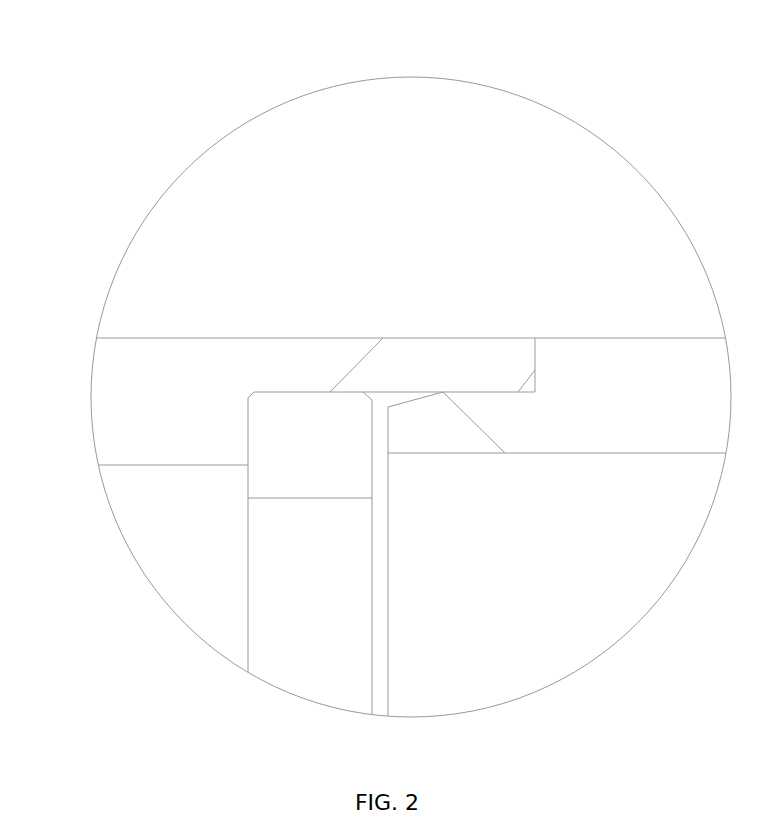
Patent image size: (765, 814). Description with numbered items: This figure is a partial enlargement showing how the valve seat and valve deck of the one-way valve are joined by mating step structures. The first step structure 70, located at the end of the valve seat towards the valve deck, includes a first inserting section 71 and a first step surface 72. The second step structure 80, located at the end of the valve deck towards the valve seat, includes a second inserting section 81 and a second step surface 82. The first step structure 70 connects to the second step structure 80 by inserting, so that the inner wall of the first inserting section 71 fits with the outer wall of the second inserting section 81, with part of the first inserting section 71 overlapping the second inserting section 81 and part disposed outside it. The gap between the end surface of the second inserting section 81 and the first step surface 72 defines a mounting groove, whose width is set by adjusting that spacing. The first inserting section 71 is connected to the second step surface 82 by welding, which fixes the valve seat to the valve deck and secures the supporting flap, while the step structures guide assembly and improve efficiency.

The first step structure 70 is at (248, 427).
The first inserting section 71 is at (422, 355).
The first step surface 72 is at (248, 393).
The second step structure 80 is at (533, 370).
The second inserting section 81 is at (453, 413).
The second step surface 82 is at (535, 352).